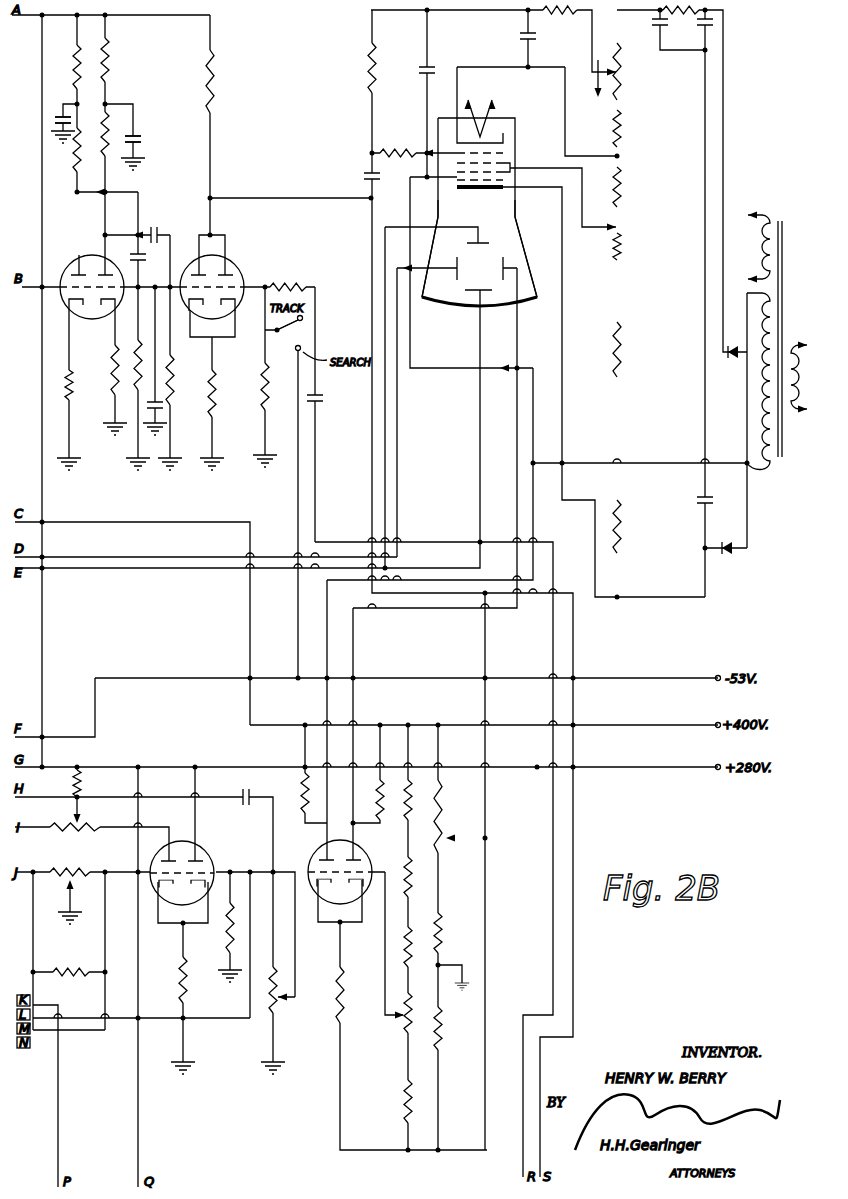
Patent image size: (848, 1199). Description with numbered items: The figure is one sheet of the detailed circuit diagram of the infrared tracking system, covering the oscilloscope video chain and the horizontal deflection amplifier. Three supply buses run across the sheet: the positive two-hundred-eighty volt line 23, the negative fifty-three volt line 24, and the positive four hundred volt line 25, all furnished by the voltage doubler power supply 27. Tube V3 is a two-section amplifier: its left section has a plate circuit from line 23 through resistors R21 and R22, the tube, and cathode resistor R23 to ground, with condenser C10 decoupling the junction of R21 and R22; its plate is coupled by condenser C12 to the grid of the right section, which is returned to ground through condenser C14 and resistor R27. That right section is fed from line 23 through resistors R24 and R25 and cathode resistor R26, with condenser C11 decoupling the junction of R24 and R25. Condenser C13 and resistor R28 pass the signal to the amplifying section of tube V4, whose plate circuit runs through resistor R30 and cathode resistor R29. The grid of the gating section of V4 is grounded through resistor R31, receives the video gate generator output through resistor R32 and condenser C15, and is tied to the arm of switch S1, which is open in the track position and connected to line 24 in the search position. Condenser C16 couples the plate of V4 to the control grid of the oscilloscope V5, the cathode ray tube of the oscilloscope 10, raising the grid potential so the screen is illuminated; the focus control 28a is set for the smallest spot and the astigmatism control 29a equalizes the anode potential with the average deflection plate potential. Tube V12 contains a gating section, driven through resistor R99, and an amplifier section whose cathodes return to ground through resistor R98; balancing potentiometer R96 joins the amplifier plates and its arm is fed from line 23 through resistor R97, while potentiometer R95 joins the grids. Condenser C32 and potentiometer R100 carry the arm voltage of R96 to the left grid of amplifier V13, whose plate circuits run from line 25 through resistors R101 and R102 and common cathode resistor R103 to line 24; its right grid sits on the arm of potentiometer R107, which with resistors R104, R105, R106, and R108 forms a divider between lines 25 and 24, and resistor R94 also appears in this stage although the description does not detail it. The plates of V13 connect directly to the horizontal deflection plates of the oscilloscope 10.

The oscilloscope 10 is at (512, 230).
The positive 280 volt line 23 is at (120, 15).
The negative 53 volt line 24 is at (130, 680).
The positive 400 volt line 25 is at (420, 725).
The voltage doubler power supply 27 is at (762, 467).
The focus control 28a is at (620, 227).
The astigmatism control 29a is at (445, 841).
The two-section amplifier tube V3 is at (106, 262).
The amplifier and gating tube V4 is at (232, 263).
The oscilloscope tube V5 is at (512, 126).
The gating and amplifier tube V12 is at (205, 857).
The horizontal deflection amplifier V13 is at (358, 856).
The track-search switch S1 is at (285, 336).
The plate resistor R21 is at (68, 67).
The plate resistor R22 is at (67, 150).
The cathode resistor R23 is at (60, 385).
The plate resistor R24 is at (117, 60).
The plate resistor R25 is at (116, 134).
The cathode resistor R26 is at (109, 370).
The grid resistor R27 is at (135, 350).
The coupling resistor R28 is at (172, 395).
The cathode resistor R29 is at (229, 393).
The plate resistor R30 is at (226, 81).
The grid resistor R31 is at (279, 386).
The coupling resistor R32 is at (288, 276).
The bypass condenser C10 is at (58, 111).
The bypass condenser C11 is at (148, 138).
The coupling condenser C12 is at (149, 262).
The coupling condenser C13 is at (162, 227).
The grid condenser C14 is at (160, 408).
The coupling condenser C15 is at (329, 398).
The coupling condenser C16 is at (361, 177).
The coupling condenser C32 is at (246, 790).
The resistor R94 is at (71, 963).
The potentiometer R95 is at (70, 865).
The balancing potentiometer R96 is at (75, 835).
The resistor R97 is at (92, 783).
The cathode resistor R98 is at (170, 980).
The coupling resistor R99 is at (218, 928).
The potentiometer R100 is at (282, 1009).
The plate resistor R101 is at (290, 793).
The plate resistor R102 is at (392, 800).
The cathode resistor R103 is at (357, 995).
The divider resistor R104 is at (421, 800).
The divider resistor R105 is at (404, 878).
The divider resistor R106 is at (423, 940).
The potentiometer R107 is at (404, 1028).
The divider resistor R108 is at (395, 1101).